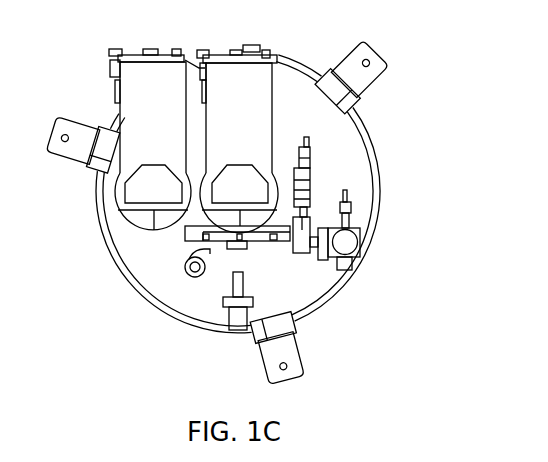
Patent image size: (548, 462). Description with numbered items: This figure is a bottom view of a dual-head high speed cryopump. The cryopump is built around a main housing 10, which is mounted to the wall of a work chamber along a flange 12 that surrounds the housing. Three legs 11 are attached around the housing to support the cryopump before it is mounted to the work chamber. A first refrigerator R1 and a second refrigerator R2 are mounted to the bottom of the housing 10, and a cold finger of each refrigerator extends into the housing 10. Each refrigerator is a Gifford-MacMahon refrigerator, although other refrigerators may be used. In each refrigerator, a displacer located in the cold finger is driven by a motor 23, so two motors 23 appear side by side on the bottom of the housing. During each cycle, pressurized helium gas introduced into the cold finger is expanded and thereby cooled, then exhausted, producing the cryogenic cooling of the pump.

The main housing 10 is at (373, 209).
The flange 12 is at (381, 175).
The legs 11 is at (301, 343).
The first refrigerator R1 is at (269, 103).
The second refrigerator R2 is at (116, 127).
The motor 23 is at (163, 139).